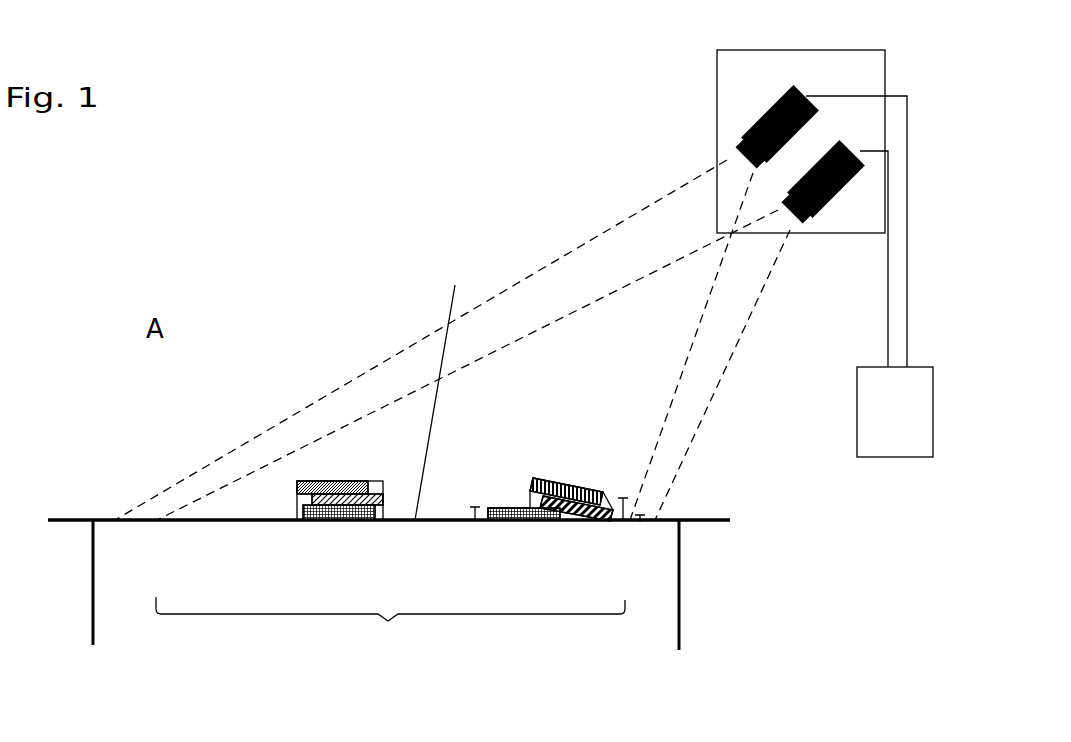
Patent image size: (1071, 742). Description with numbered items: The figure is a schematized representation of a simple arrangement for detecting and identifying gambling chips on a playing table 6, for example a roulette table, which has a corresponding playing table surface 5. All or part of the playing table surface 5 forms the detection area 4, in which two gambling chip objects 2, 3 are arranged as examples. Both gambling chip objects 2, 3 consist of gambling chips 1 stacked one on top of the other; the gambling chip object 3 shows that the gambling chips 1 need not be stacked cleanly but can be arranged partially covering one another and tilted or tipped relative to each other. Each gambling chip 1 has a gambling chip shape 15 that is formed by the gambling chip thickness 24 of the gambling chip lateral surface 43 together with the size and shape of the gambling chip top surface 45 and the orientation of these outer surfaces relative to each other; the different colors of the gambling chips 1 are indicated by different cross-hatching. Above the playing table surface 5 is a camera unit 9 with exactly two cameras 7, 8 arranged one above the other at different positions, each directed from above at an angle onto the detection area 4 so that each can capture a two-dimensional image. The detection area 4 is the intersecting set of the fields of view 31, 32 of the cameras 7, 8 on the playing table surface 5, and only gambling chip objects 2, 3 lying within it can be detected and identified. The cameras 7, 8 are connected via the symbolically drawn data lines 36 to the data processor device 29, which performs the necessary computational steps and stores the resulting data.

The gambling chip 1 is at (388, 505).
The gambling chip object 2 is at (328, 541).
The gambling chip object 3 is at (533, 541).
The detection area 4 is at (390, 627).
The playing table surface 5 is at (439, 385).
The playing table 6 is at (690, 527).
The camera 7 is at (747, 130).
The camera 8 is at (838, 192).
The camera unit 9 is at (776, 63).
The gambling chip shape 15 is at (318, 481).
The gambling chip thickness 24 is at (474, 506).
The data processor device 29 is at (895, 412).
The field of view 31 is at (622, 231).
The field of view 32 is at (747, 301).
The data lines 36 is at (904, 327).
The gambling chip lateral surface 43 is at (305, 508).
The gambling chip top surface 45 is at (333, 483).